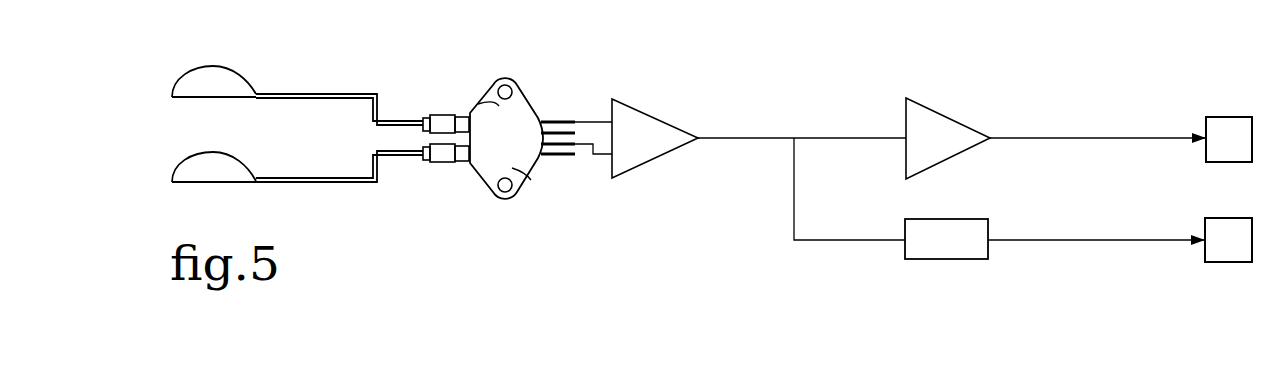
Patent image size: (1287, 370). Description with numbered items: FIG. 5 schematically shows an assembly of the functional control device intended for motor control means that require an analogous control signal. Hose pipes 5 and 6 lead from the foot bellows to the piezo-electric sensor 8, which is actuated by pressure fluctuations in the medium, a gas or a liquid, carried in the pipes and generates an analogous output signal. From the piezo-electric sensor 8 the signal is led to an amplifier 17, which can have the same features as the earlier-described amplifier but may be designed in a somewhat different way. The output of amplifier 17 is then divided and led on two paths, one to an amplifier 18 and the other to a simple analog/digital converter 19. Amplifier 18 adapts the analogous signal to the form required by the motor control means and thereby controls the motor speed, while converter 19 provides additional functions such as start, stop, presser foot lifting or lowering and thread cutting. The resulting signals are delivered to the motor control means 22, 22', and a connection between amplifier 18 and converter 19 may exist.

The hose pipe 5 is at (290, 90).
The hose pipe 6 is at (290, 183).
The piezo-electric sensor 8 is at (523, 88).
The amplifier 17 is at (658, 115).
The amplifier 18 is at (950, 117).
The analog/digital converter 19 is at (943, 259).
The motor control means 22 is at (1202, 103).
The motor control means 22' is at (1204, 273).